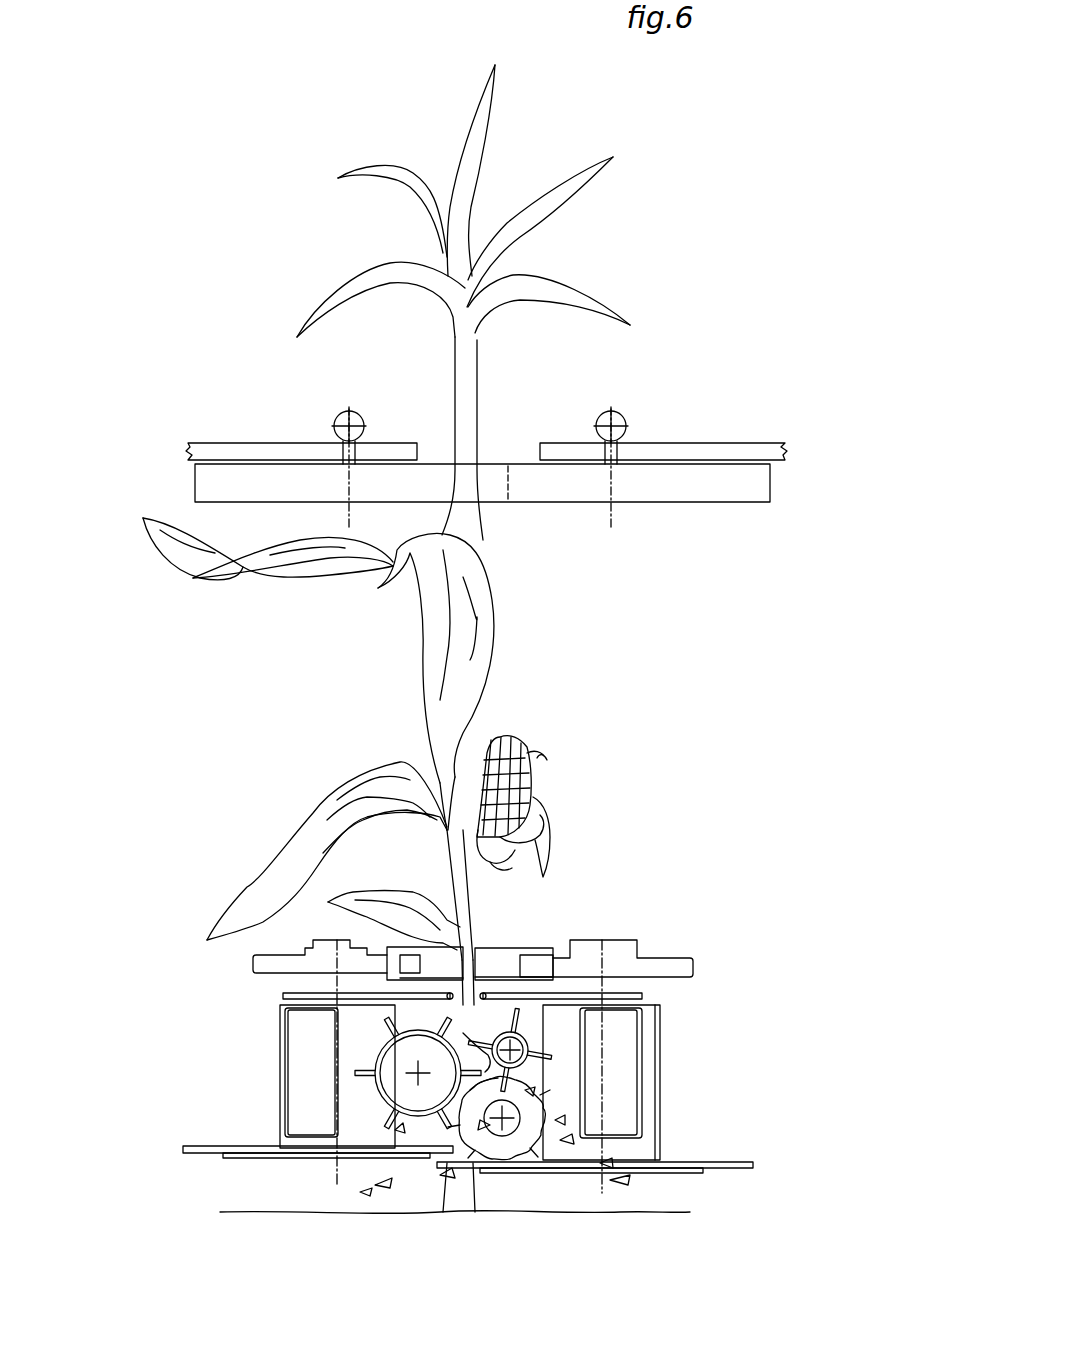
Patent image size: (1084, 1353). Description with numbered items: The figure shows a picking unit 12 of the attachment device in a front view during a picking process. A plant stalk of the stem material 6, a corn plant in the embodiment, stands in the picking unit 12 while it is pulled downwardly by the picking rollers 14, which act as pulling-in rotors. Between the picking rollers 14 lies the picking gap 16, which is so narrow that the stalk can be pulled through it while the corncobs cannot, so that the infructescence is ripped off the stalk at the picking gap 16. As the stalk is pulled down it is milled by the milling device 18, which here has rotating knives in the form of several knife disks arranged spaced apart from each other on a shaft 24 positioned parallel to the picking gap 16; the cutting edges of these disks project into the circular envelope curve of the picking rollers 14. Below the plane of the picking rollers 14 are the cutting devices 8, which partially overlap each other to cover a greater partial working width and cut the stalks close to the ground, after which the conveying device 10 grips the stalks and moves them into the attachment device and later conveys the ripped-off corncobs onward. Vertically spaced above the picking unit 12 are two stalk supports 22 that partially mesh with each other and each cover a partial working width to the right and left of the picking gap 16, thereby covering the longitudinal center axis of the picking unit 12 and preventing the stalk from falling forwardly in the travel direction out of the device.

The stem material 6 is at (432, 652).
The cutting device 8 is at (237, 1148).
The conveying device 10 is at (413, 968).
The picking unit 12 is at (392, 1007).
The picking rollers 14 is at (375, 1060).
The picking gap 16 is at (383, 955).
The milling device 18 is at (523, 1158).
The stalk supports 22 is at (270, 478).
The shaft 24 is at (545, 1100).